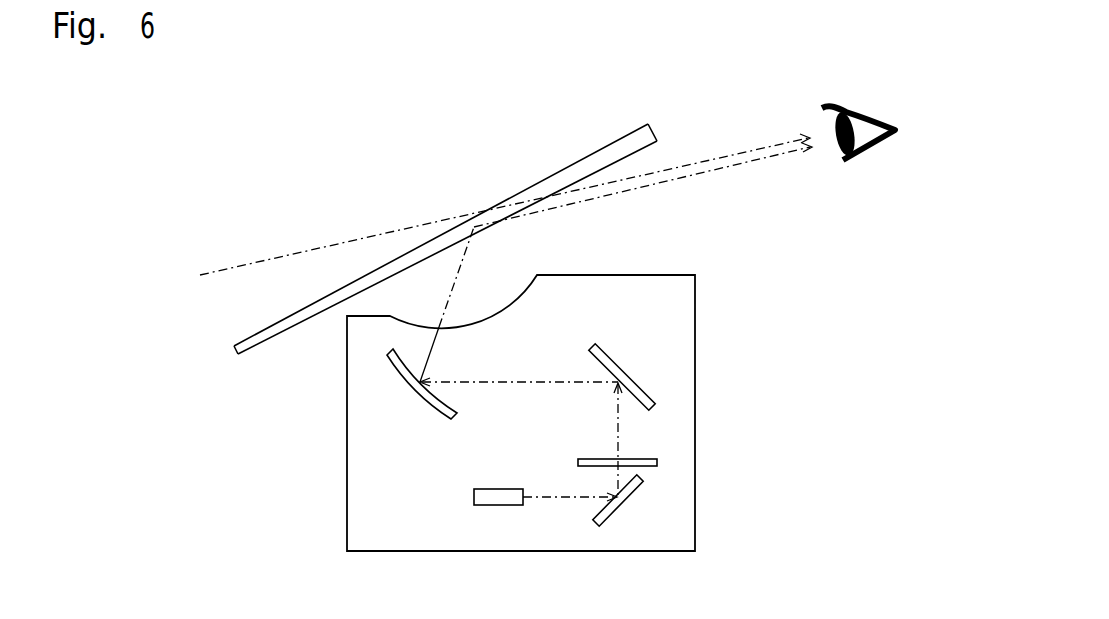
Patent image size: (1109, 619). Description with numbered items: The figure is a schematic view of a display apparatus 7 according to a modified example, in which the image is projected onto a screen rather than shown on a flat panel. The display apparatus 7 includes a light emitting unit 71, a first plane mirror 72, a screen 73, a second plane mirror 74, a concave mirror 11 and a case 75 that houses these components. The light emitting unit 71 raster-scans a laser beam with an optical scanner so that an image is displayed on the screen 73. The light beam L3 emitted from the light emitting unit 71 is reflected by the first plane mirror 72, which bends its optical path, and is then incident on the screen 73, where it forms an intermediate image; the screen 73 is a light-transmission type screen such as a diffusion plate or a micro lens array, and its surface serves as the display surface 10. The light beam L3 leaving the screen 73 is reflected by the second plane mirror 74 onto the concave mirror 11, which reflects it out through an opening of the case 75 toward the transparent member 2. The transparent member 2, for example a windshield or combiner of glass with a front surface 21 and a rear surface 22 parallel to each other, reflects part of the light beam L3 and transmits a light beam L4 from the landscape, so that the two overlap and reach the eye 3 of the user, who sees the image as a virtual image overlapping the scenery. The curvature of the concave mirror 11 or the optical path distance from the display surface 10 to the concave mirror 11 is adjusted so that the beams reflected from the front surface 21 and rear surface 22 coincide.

The transparent member 2 is at (426, 264).
The eye 3 is at (867, 108).
The display apparatus 7 is at (556, 394).
The display surface 10 is at (661, 406).
The concave mirror 11 is at (402, 377).
The front surface 21 is at (280, 332).
The rear surface 22 is at (265, 327).
The light emitting unit 71 is at (500, 505).
The first plane mirror 72 is at (608, 517).
The screen 73 is at (657, 462).
The second plane mirror 74 is at (637, 392).
The case 75 is at (695, 313).
The light beam L3 is at (647, 187).
The light beam L4 is at (412, 226).